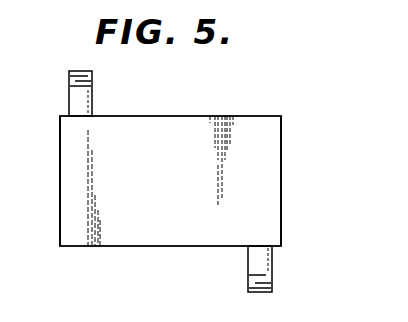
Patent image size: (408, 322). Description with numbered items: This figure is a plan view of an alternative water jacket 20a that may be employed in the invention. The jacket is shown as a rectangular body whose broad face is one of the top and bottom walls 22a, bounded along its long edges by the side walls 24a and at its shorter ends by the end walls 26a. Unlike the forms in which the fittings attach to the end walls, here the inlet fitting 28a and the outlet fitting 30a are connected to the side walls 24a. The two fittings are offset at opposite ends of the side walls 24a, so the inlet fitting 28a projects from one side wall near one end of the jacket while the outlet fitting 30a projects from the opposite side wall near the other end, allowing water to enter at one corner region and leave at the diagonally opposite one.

The alternative jacket 20a is at (262, 115).
The top and bottom walls 22a is at (171, 177).
The side walls 24a is at (180, 116).
The end walls 26a is at (60, 187).
The inlet fitting 28a is at (93, 102).
The outlet fitting 30a is at (273, 267).